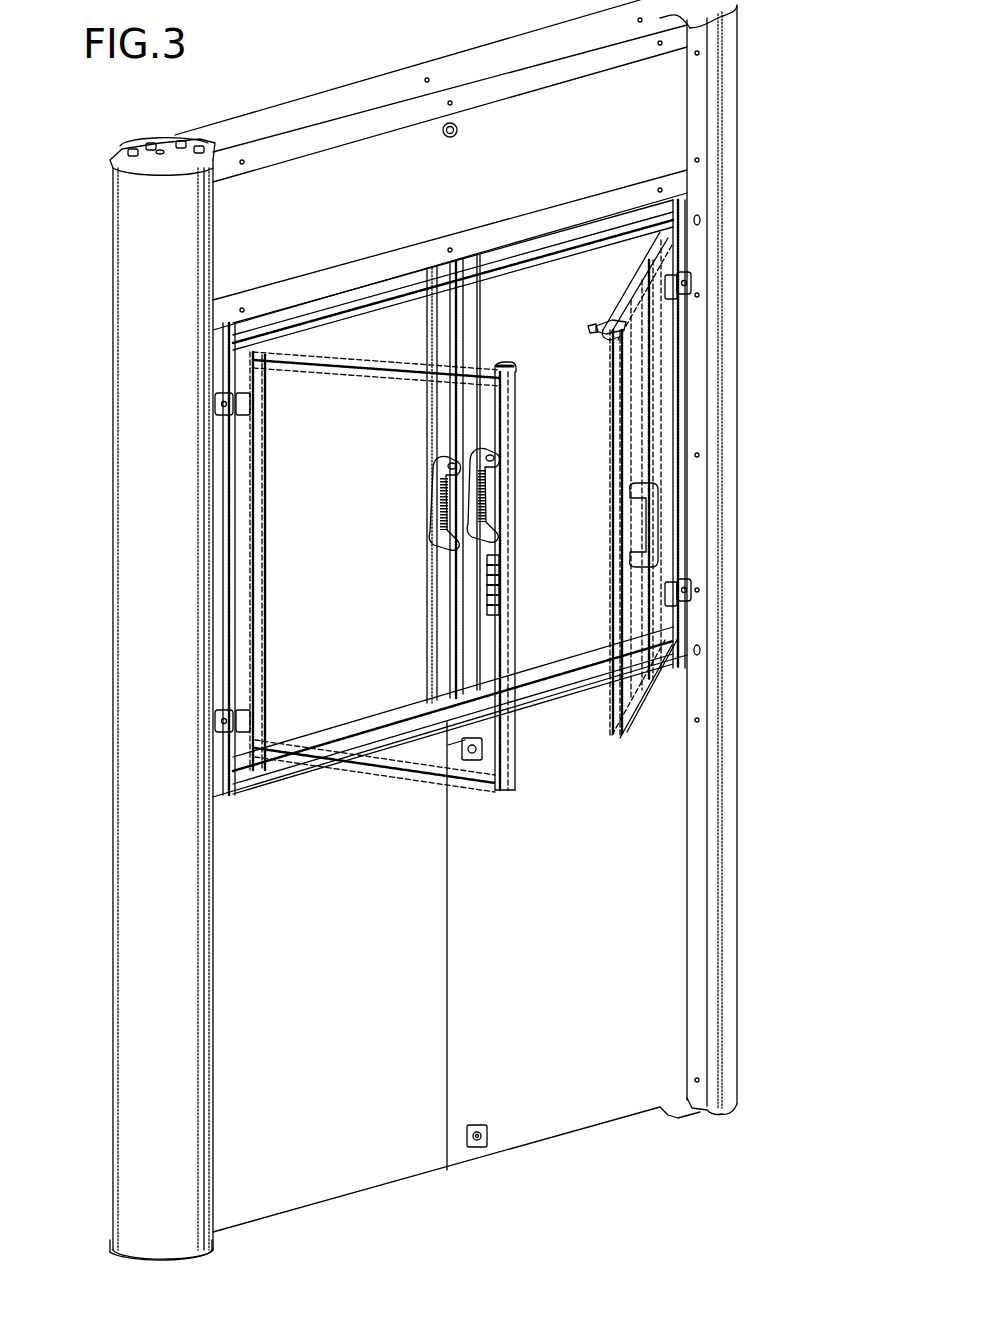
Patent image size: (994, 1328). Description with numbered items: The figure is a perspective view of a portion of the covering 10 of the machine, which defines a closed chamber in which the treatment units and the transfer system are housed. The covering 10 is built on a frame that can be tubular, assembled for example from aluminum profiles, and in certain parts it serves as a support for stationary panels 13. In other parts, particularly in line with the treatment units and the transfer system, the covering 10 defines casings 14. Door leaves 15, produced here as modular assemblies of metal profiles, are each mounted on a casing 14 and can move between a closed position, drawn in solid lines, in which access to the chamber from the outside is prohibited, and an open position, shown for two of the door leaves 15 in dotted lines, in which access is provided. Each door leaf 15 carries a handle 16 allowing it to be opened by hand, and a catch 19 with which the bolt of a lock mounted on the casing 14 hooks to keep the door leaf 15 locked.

The covering 10 is at (738, 109).
The stationary panels 13 is at (337, 1178).
The casing 14 is at (395, 282).
The door leaf 15 is at (520, 275).
The handle 16 is at (470, 455).
The catch 19 is at (520, 358).